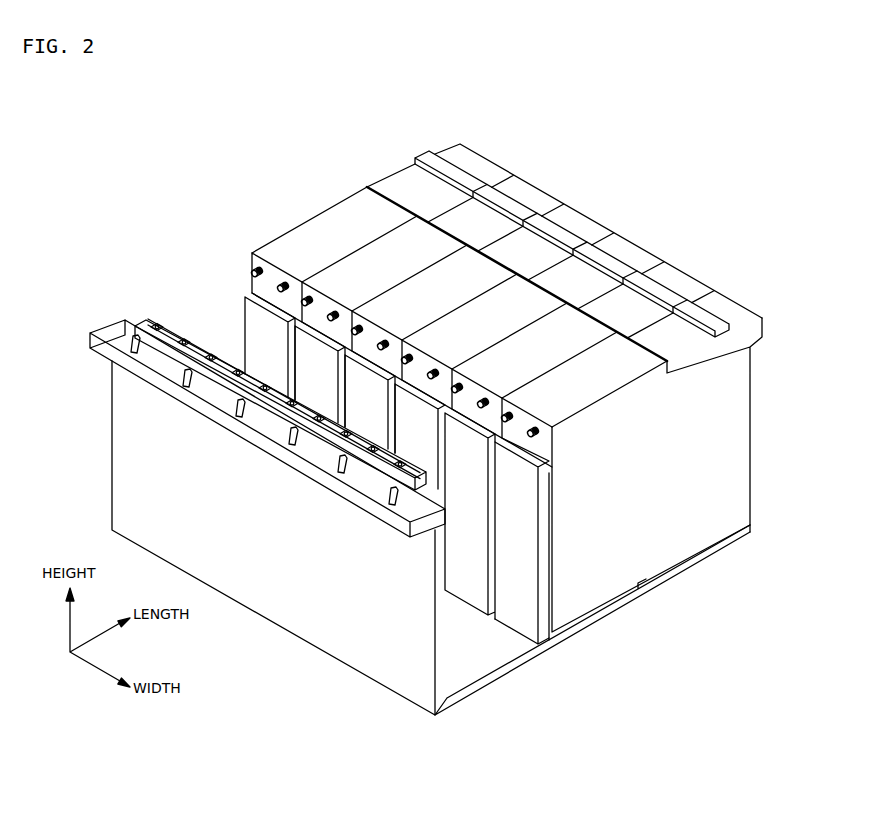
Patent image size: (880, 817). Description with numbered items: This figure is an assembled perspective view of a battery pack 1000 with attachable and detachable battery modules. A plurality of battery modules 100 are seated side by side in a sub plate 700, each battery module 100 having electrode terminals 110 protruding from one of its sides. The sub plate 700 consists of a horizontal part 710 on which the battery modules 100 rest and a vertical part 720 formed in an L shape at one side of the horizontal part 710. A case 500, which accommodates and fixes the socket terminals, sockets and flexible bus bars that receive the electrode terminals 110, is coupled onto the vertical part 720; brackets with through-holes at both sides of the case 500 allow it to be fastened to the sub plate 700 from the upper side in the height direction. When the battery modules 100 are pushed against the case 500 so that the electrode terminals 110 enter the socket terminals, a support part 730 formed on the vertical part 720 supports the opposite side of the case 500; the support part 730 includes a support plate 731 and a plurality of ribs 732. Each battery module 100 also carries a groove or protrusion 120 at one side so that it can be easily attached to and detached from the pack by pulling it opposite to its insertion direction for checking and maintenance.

The battery pack 1000 is at (636, 105).
The battery module 100 is at (405, 230).
The electrode terminal 110 is at (262, 256).
The groove or protrusion 120 is at (700, 320).
The case 500 is at (192, 322).
The sub plate 700 is at (90, 404).
The horizontal part 710 is at (480, 658).
The vertical part 720 is at (112, 463).
The support part 730 is at (297, 678).
The support plate 731 is at (337, 456).
The rib 732 is at (291, 447).